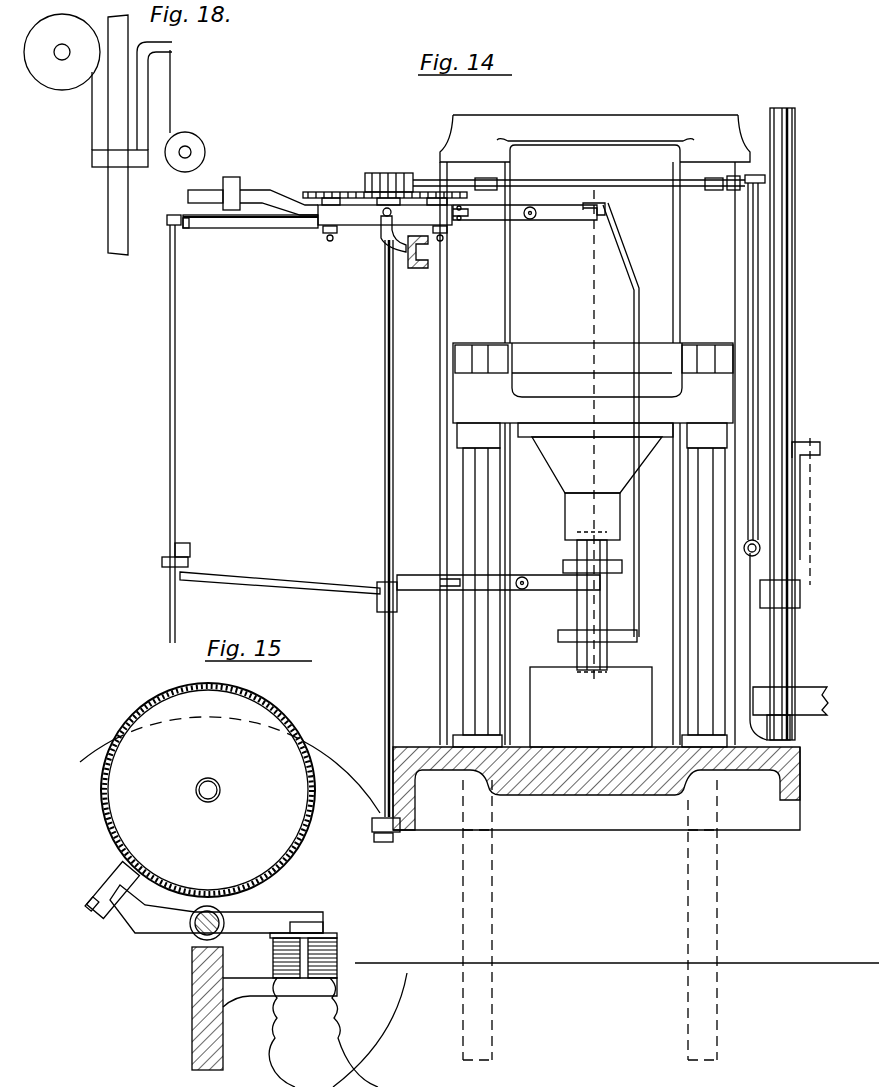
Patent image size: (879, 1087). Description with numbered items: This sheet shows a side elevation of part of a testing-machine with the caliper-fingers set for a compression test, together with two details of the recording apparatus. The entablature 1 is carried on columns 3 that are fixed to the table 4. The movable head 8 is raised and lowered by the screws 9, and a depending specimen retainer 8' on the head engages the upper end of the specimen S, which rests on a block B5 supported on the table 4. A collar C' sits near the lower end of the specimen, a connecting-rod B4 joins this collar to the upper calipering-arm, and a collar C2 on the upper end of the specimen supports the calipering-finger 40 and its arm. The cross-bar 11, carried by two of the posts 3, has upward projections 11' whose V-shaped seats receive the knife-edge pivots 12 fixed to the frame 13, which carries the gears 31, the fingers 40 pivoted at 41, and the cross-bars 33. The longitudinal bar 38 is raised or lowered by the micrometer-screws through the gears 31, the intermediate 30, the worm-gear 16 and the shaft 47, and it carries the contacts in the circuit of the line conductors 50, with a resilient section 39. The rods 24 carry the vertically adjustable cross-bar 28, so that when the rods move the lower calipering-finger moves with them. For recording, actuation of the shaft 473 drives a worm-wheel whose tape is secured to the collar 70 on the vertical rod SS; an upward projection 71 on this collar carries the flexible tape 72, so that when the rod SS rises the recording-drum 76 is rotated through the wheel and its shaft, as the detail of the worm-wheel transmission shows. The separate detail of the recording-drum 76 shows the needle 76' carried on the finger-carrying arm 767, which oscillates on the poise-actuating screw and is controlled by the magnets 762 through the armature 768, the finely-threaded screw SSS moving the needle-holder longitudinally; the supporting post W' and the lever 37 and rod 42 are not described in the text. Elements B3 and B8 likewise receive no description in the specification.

In FIG. 14, the entablature 1 is at (596, 112).
In FIG. 14, the columns 3 is at (500, 265).
In FIG. 14, the table 4 is at (560, 755).
In FIG. 14, the movable head 8 is at (599, 455).
In FIG. 14, the specimen retainer 8' is at (592, 502).
In FIG. 14, the screws 9 is at (493, 865).
In FIG. 14, the cross-bar 11 is at (414, 263).
In FIG. 14, the upward-extending projections 11' is at (379, 247).
In FIG. 14, the knife-edge pivots 12 is at (392, 212).
In FIG. 14, the frame 13 is at (360, 218).
In FIG. 14, the worm-gear 16 is at (408, 170).
In FIG. 14, the rod 24 is at (385, 440).
In FIG. 14, the cross-bar 28 is at (375, 606).
In FIG. 14, the intermediate 30 is at (360, 190).
In FIG. 14, the gears 31 is at (332, 196).
In FIG. 14, the cross-bars 33 is at (328, 241).
In FIG. 14, the rod 37 is at (620, 222).
In FIG. 14, the longitudinal bar 38 is at (265, 230).
In FIG. 14, the resilient section 39 is at (250, 217).
In FIG. 14, the calipers 40 is at (565, 222).
In FIG. 14, the pivot 41 is at (812, 552).
In FIG. 14, the vertical rod 42 is at (176, 452).
In FIG. 14, the shaft 47 is at (758, 302).
In FIG. 14, the shaft 473 is at (762, 546).
In FIG. 14, the line conductors 50 is at (186, 228).
In FIG. 18, the collar 70 is at (137, 168).
In FIG. 14, the collar 70 is at (800, 606).
In FIG. 18, the upward-extending projection 71 is at (175, 44).
In FIG. 14, the metallic tape 72 is at (812, 478).
In FIG. 15, the recording-drum 76 is at (230, 790).
In FIG. 15, the needle 76' is at (87, 889).
In FIG. 15, the finger-carrying arm 767 is at (128, 920).
In FIG. 15, the armature 768 is at (330, 933).
In FIG. 15, the magnets 762 is at (338, 955).
In FIG. 14, the lower die holder B3 is at (552, 512).
In FIG. 14, the connecting-rod B4 is at (622, 566).
In FIG. 14, the block B5 is at (591, 707).
In FIG. 14, the trip B8 is at (600, 203).
In FIG. 14, the collar C' is at (579, 644).
In FIG. 14, the collar C2 is at (612, 560).
In FIG. 14, the specimen S is at (577, 610).
In FIG. 14, the rod SS is at (795, 380).
In FIG. 15, the finely-threaded screw SSS is at (190, 930).
In FIG. 15, the support post W' is at (175, 1008).